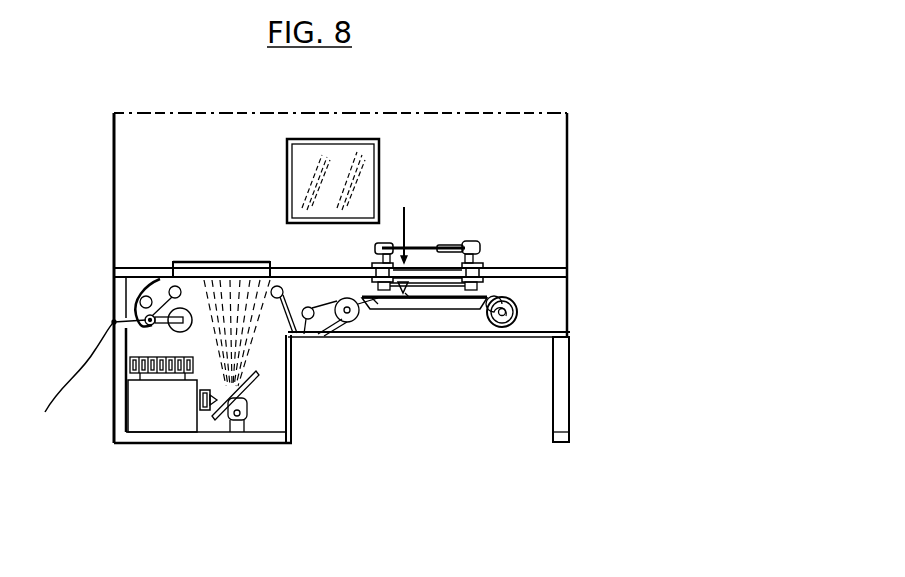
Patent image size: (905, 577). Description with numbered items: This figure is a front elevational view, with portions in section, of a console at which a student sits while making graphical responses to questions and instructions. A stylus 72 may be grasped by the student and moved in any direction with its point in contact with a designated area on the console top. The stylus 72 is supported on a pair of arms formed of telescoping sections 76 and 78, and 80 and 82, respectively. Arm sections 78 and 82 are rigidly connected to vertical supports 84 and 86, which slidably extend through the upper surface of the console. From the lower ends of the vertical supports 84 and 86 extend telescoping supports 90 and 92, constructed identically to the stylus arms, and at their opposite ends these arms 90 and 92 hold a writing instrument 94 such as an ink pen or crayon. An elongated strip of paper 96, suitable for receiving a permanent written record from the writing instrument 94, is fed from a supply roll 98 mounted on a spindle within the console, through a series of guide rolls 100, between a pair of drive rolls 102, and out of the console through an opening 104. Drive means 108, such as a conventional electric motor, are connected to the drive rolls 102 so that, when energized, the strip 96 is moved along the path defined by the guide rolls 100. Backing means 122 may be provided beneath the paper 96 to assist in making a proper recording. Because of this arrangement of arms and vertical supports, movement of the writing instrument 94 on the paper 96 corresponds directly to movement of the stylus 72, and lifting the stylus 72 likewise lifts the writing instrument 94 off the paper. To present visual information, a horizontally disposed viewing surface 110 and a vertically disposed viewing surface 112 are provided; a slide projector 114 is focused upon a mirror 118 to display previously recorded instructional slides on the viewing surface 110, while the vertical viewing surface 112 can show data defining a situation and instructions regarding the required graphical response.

The stylus 72 is at (407, 216).
The telescoping arm section 76 is at (392, 246).
The telescoping arm section 78 is at (375, 247).
The telescoping arm section 80 is at (421, 247).
The telescoping arm section 82 is at (453, 244).
The vertical support 84 is at (372, 270).
The vertical support 86 is at (482, 257).
The telescoping support 90 is at (386, 293).
The telescoping support 92 is at (451, 299).
The writing instrument 94 is at (410, 295).
The strip of paper 96 is at (376, 301).
The supply roll 98 is at (507, 327).
The guide rolls 100 is at (304, 336).
The drive rolls 102 is at (150, 293).
The opening 104 is at (114, 322).
The drive means 108 is at (190, 331).
The horizontally disposed viewing surface 110 is at (245, 262).
The vertically disposed viewing surface 112 is at (298, 160).
The slide projector 114 is at (171, 416).
The mirror 118 is at (217, 420).
The backing means 122 is at (406, 305).